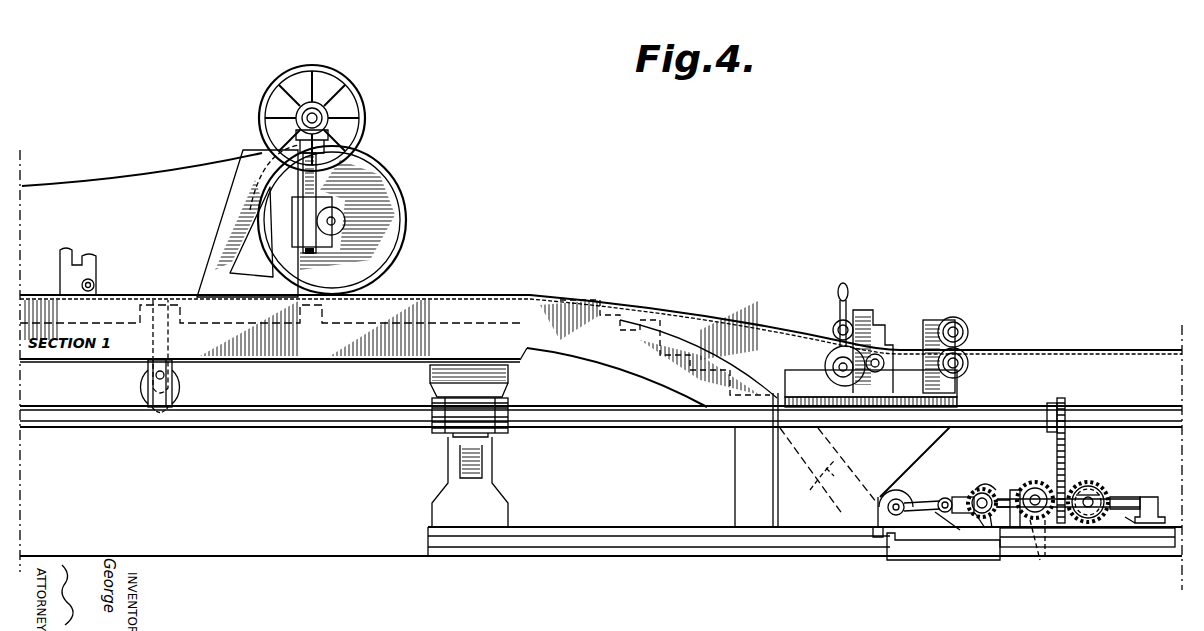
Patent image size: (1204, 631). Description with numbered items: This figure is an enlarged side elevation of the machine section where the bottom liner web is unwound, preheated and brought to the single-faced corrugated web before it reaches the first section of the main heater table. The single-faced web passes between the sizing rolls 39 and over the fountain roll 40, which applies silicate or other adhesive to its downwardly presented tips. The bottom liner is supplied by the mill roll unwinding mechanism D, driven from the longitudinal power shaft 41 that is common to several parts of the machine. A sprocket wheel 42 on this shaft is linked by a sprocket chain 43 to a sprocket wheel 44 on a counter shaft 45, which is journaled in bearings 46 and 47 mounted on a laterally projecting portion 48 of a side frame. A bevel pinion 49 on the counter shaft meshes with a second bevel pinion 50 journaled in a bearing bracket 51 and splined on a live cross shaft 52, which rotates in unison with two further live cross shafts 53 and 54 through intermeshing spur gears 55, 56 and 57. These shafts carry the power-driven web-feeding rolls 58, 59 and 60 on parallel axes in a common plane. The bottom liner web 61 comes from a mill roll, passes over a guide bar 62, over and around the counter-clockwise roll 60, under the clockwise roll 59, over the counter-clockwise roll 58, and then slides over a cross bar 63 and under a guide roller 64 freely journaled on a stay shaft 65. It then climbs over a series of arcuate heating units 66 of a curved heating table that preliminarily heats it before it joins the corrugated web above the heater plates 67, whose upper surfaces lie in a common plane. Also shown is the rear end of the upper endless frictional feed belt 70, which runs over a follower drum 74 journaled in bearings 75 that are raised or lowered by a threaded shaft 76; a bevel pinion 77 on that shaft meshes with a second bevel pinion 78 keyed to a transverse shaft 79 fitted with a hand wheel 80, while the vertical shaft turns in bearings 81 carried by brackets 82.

The sizing rolls 39 is at (967, 363).
The fountain roll 40 is at (833, 358).
The longitudinal power shaft 41 is at (283, 420).
The sprocket wheel 42 is at (1062, 398).
The sprocket chain 43 is at (1057, 444).
The sprocket wheel 44 is at (1062, 512).
The counter shaft 45 is at (1122, 498).
The bearing 46 is at (1015, 492).
The bearing 47 is at (1150, 497).
The laterally projecting portion 48 is at (1105, 546).
The bevel pinion 49 is at (990, 515).
The second bevel pinion 50 is at (912, 547).
The bearing bracket 51 is at (975, 513).
The live cross shaft 52 is at (982, 489).
The live cross shaft 53 is at (1030, 520).
The live cross shaft 54 is at (1095, 490).
The spur gear 55 is at (945, 498).
The spur gear 56 is at (1037, 482).
The spur gear 57 is at (1086, 482).
The web-feeding roll 58 is at (975, 494).
The web-feeding roll 59 is at (1045, 525).
The web-feeding roll 60 is at (1092, 483).
The bottom liner web 61 is at (920, 503).
The guide bar 62 is at (1127, 517).
The cross bar 63 is at (935, 512).
The guide roller 64 is at (875, 505).
The stay shaft 65 is at (895, 499).
The arcuate heating units 66 is at (668, 315).
The heater plate 67 is at (423, 312).
The upper endless frictional feed belt 70 is at (158, 297).
The follower drum 74 is at (390, 226).
The bearing 75 is at (332, 210).
The threaded shaft 76 is at (316, 170).
The bevel pinion 77 is at (262, 153).
The second bevel pinion 78 is at (325, 113).
The transverse shaft 79 is at (292, 108).
The hand wheel 80 is at (315, 65).
The bearing 81 is at (325, 137).
The bracket 82 is at (236, 217).
The mill roll unwinding mechanism D is at (1137, 469).